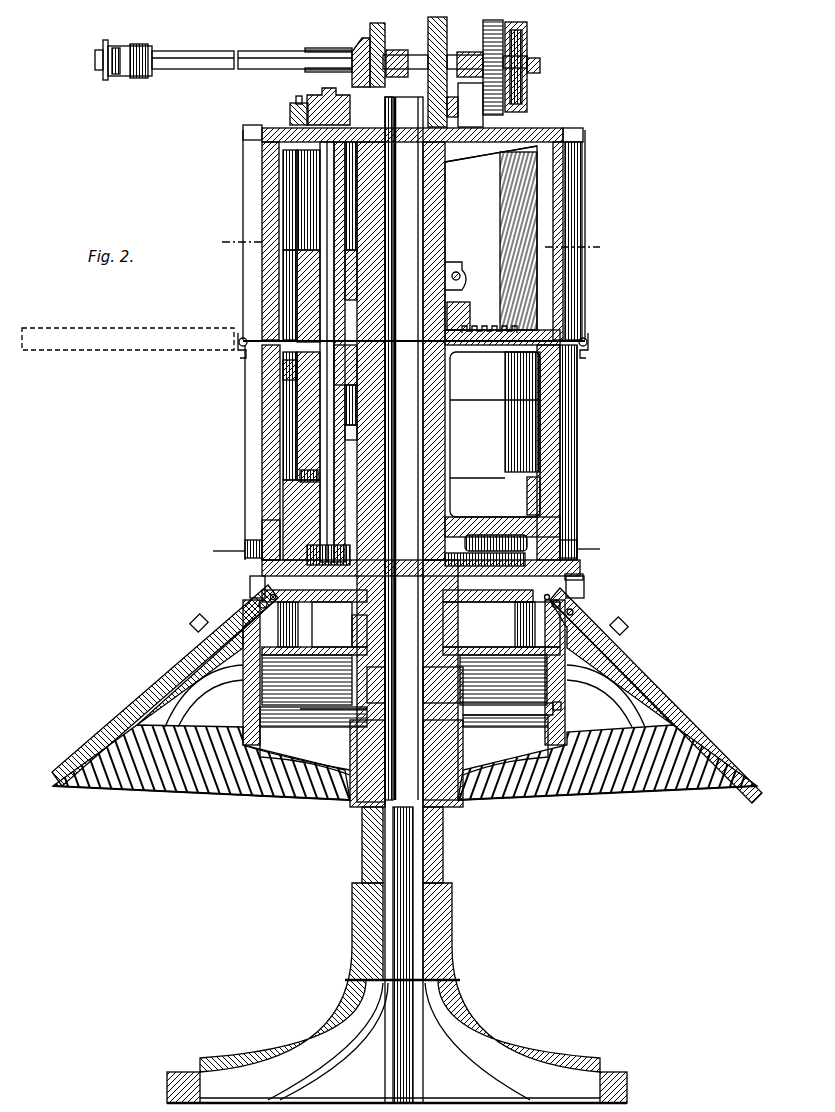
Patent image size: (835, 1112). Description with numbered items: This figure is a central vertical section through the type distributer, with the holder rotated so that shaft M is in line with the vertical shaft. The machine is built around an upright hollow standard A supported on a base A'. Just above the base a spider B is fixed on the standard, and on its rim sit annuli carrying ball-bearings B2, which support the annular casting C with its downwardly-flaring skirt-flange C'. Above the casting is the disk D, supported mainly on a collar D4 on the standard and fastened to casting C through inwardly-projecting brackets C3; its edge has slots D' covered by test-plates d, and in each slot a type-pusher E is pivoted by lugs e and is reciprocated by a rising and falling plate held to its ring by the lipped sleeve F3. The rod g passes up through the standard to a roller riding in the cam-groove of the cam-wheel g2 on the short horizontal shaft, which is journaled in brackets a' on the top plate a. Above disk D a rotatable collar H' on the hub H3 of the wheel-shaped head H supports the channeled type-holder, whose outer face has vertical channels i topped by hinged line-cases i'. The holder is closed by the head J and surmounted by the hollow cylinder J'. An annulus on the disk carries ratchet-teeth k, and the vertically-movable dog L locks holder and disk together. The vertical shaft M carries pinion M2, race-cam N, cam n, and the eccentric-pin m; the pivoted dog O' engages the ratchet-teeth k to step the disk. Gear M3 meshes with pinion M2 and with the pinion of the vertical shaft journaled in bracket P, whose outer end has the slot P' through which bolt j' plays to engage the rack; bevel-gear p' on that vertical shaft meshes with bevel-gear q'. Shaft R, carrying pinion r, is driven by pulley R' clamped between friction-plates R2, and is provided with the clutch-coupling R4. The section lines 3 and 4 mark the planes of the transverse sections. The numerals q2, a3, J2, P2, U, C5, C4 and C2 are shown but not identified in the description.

The clutch-coupling R4 is at (123, 50).
The shaft R is at (252, 53).
The bevel-gear q' is at (359, 47).
The collar q2 is at (380, 24).
The brackets a' is at (398, 48).
The cam-wheel g2 is at (447, 22).
The pinion r is at (493, 20).
The pulley R' is at (529, 56).
The friction-plates R2 is at (540, 58).
The collar a3 is at (470, 52).
The top plate a is at (491, 125).
The rod g is at (422, 600).
The bevel-gear p' is at (316, 100).
The hinged line-case i' is at (313, 251).
The vertical channels i is at (414, 452).
The sleeve J2 is at (283, 222).
The hollow cylinder J' is at (272, 292).
The slot P' is at (275, 296).
The bracket P is at (396, 352).
The block P2 is at (362, 262).
The bolt j' is at (491, 238).
The gear M3 is at (470, 310).
The head J is at (489, 320).
The hub H3 is at (455, 500).
The piece U is at (496, 541).
The rotatable collar H' is at (485, 569).
The pinion M2 is at (351, 365).
The vertical shaft M is at (355, 405).
The cam n is at (354, 428).
The race-cam N is at (283, 468).
The dog L is at (305, 515).
The eccentric-pin m is at (262, 532).
The dog O' is at (328, 565).
The ratchet-teeth k is at (402, 547).
The section line 4 4 is at (406, 549).
The section line 3 3 is at (411, 244).
The test-plates d is at (580, 578).
The slots D' is at (415, 582).
The type-pusher E is at (256, 599).
The lugs e is at (590, 612).
The lug C5 is at (192, 626).
The skirt-flange C' is at (407, 694).
The toothed rim C4 is at (405, 765).
The ball-bearings B2 is at (248, 706).
The brackets C3 is at (288, 624).
The disk D is at (339, 624).
The collar D4 is at (501, 624).
The cylinder C2 is at (512, 624).
The annular casting C is at (404, 680).
The wheel-shaped head H is at (401, 601).
The lipped sleeve F3 is at (430, 699).
The spider B is at (395, 751).
The hollow standard A is at (413, 955).
The base A' is at (397, 1047).